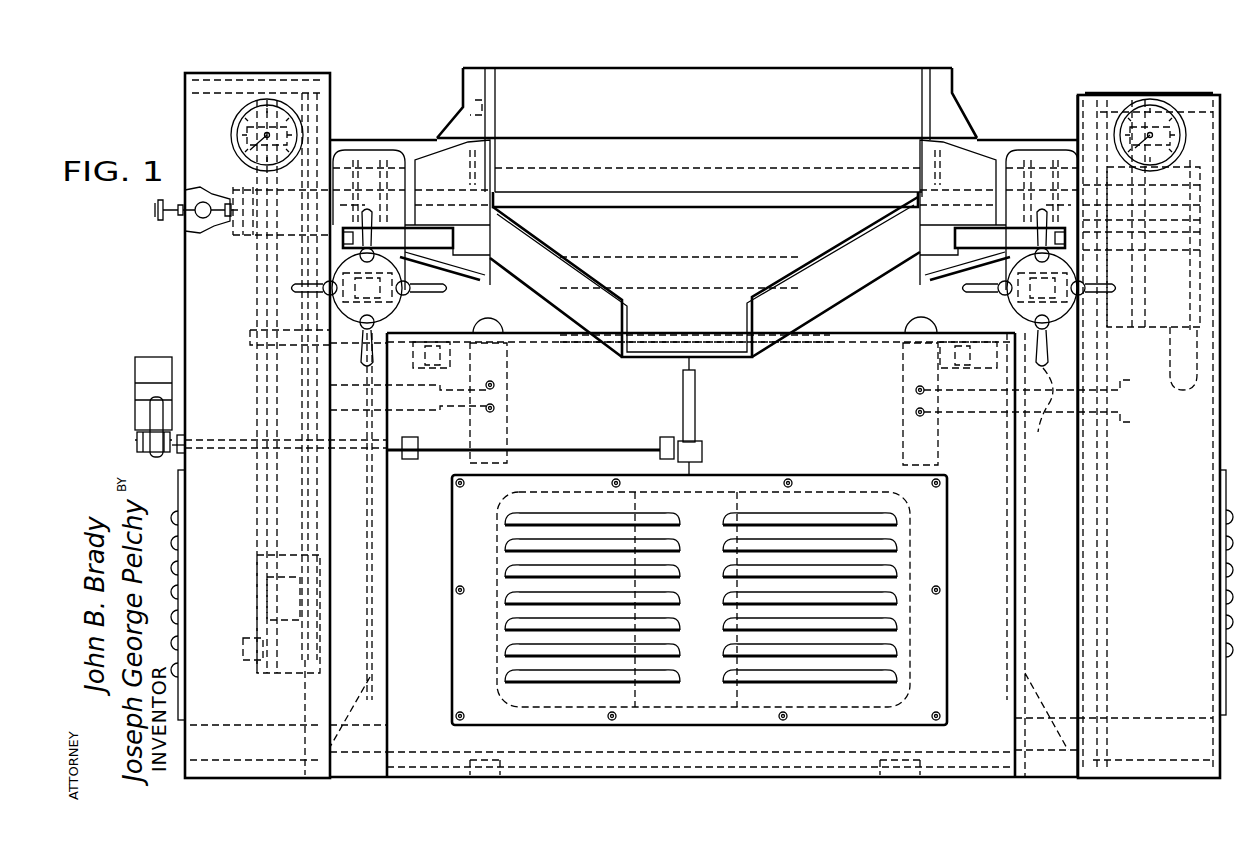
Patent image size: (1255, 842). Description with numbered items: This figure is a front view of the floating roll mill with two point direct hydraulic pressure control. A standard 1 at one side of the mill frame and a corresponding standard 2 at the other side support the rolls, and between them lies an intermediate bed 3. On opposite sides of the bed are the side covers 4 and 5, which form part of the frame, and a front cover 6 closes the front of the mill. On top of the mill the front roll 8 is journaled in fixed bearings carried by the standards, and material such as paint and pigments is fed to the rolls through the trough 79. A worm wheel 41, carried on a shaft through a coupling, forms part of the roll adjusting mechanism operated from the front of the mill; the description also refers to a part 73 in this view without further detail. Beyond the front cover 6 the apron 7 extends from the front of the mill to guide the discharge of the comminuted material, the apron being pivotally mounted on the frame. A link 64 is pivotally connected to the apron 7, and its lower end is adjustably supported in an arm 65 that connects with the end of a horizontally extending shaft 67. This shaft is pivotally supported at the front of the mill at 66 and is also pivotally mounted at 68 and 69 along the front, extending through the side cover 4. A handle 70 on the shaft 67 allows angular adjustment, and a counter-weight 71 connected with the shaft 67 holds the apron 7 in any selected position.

The standard 1 is at (340, 497).
The standard 2 is at (1058, 517).
The intermediate bed 3 is at (832, 336).
The side cover 4 is at (215, 292).
The side cover 5 is at (1183, 594).
The front cover 6 is at (837, 468).
The apron 7 is at (790, 335).
The front roll 8 is at (700, 141).
The worm wheel 41 is at (1049, 412).
The link 64 is at (697, 396).
The arm 65 is at (703, 455).
The pivotal support 66 is at (667, 437).
The horizontally extending shaft 67 is at (560, 446).
The pivotal mounting 68 is at (410, 461).
The pivotal mounting 69 is at (184, 436).
The handle 70 is at (150, 418).
The counter-weight 71 is at (150, 370).
The hinge 73 is at (280, 470).
The trough 79 is at (802, 80).